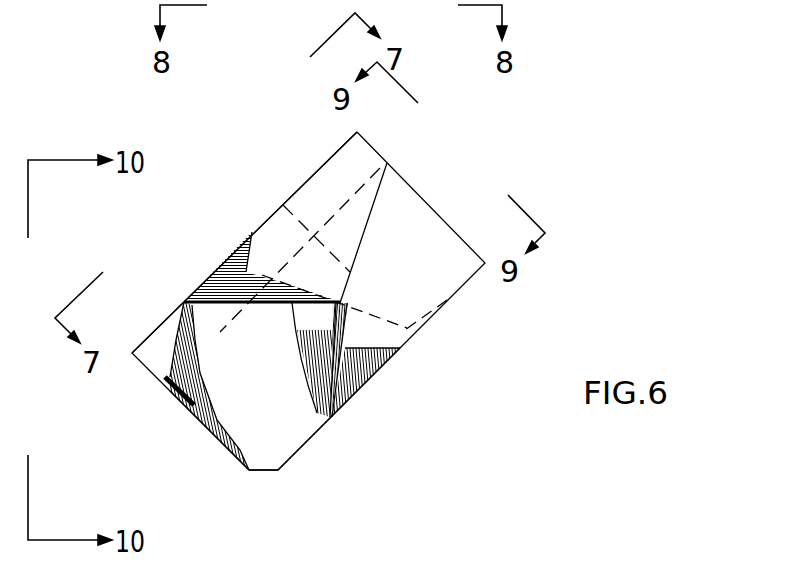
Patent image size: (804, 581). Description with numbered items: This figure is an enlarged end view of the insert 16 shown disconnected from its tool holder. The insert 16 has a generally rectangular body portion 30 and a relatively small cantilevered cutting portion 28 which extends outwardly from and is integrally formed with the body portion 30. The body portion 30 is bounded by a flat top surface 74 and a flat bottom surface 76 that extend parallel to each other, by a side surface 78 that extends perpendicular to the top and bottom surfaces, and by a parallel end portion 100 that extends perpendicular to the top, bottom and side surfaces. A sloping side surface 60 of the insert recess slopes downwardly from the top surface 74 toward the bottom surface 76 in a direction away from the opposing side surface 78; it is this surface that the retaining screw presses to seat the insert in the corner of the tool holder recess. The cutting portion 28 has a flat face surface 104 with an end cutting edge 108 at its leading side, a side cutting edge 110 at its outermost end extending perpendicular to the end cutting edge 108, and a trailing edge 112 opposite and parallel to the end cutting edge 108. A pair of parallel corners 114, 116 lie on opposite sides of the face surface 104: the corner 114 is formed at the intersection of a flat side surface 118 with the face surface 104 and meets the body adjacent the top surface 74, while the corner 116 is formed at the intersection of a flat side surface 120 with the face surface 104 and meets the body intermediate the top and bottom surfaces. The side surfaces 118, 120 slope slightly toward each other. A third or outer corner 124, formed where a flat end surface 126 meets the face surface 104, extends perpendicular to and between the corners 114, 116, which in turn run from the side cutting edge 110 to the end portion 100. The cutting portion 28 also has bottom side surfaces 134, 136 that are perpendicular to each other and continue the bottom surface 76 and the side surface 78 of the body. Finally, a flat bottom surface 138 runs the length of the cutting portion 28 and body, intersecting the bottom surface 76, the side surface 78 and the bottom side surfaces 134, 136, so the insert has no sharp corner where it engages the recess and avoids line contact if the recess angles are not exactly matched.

The insert 16 is at (436, 182).
The body portion 30 is at (301, 174).
The sloping side surface 60 is at (249, 230).
The flat top surface 74 is at (208, 298).
The face surface 104 is at (210, 303).
The end cutting edge 108 is at (183, 302).
The corner 114 is at (182, 312).
The flat side surface 118 is at (176, 343).
The bottom side surface 136 is at (227, 447).
The side surface 78 is at (167, 390).
The cantilevered cutting portion 28 is at (193, 400).
The flat bottom surface 138 is at (257, 472).
The flat end surface 126 is at (282, 438).
The bottom side surface 134 is at (313, 437).
The end portion 100 is at (374, 375).
The flat side surface 120 is at (365, 371).
The flat bottom surface 76 is at (358, 378).
The trailing edge 112 is at (343, 300).
The corner 116 is at (392, 315).
The side cutting edge 110 is at (282, 304).
The outer corner 124 is at (253, 300).